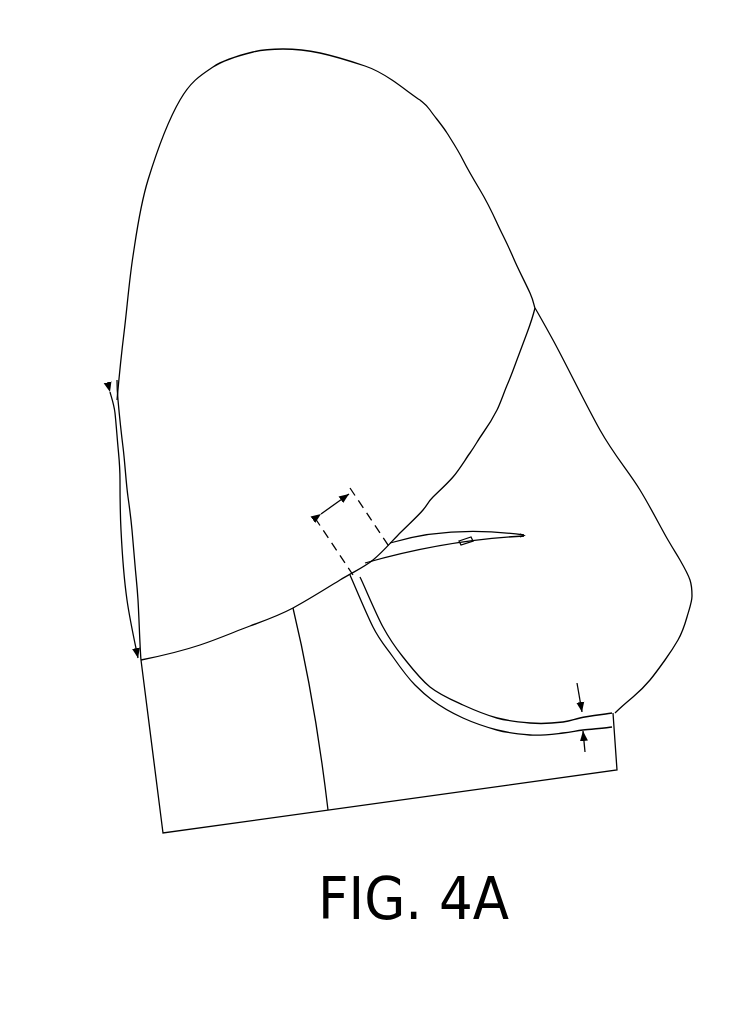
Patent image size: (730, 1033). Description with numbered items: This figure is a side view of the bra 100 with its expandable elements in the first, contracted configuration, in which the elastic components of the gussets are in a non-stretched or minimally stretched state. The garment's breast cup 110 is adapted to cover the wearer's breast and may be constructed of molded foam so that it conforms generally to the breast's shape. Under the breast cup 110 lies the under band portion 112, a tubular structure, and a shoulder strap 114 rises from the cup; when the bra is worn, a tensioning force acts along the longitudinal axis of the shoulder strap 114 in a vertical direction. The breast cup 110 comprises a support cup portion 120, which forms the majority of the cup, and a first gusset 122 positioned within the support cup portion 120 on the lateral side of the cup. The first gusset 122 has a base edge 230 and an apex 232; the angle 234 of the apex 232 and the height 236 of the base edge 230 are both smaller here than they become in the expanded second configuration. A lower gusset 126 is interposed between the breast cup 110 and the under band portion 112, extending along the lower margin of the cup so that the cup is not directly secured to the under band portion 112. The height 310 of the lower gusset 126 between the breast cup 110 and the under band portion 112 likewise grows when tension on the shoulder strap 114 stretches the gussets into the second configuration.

The bra 100 is at (101, 134).
The breast cup 110 is at (597, 471).
The under band portion 112 is at (528, 770).
The shoulder strap 114 is at (128, 536).
The support cup portion 120 is at (552, 392).
The first gusset 122 is at (411, 548).
The lower gusset 126 is at (450, 707).
The base edge 230 is at (377, 542).
The apex 232 is at (526, 532).
The angle 234 is at (462, 546).
The height 236 is at (336, 503).
The height 310 is at (575, 702).